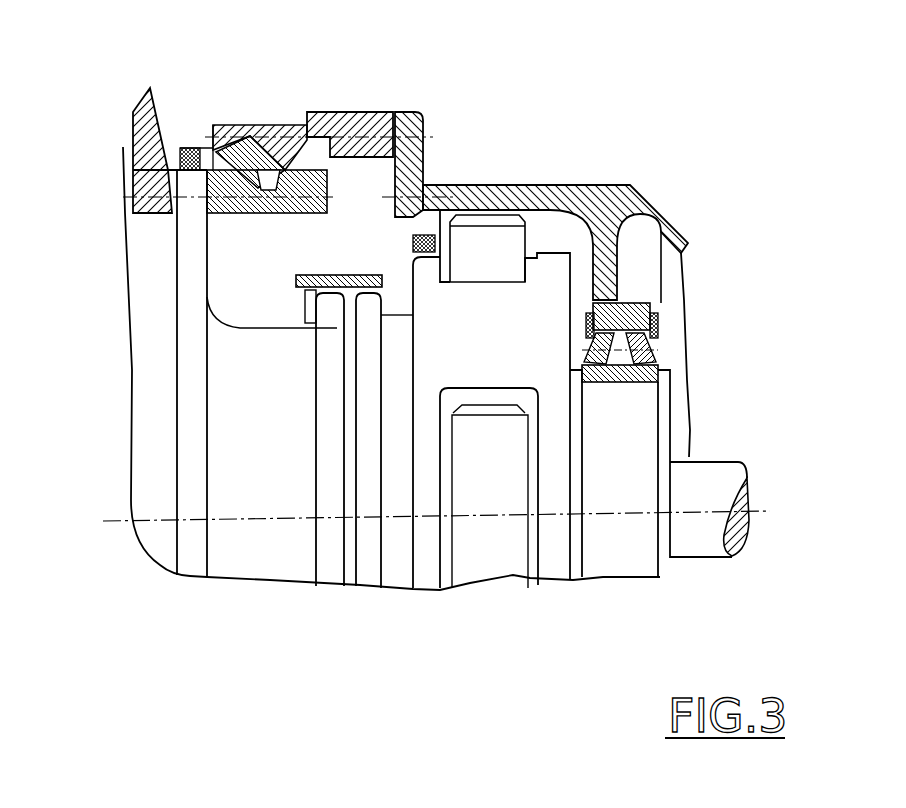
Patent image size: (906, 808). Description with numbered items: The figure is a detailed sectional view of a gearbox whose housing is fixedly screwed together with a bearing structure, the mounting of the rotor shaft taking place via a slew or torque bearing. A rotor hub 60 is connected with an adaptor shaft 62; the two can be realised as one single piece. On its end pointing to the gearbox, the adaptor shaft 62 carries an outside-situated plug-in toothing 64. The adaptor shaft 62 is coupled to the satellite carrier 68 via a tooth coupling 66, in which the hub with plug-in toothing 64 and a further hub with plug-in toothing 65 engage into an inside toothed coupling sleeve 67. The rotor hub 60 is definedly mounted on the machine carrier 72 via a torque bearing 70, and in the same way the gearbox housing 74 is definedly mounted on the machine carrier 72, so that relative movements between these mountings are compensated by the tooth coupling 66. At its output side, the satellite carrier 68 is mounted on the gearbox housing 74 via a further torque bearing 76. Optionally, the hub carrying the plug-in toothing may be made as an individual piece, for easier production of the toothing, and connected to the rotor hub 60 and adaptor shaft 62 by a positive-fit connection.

The rotor hub 60 is at (143, 117).
The adaptor shaft 62 is at (192, 573).
The plug-in toothing 64 is at (338, 328).
The plug-in toothing 65 is at (396, 570).
The tooth coupling 66 is at (370, 258).
The coupling sleeve 67 is at (315, 275).
The satellite carrier 68 is at (553, 280).
The torque bearing 70 is at (248, 127).
The machine carrier 72 is at (352, 120).
The gearbox housing 74 is at (413, 170).
The torque bearing 76 is at (673, 355).